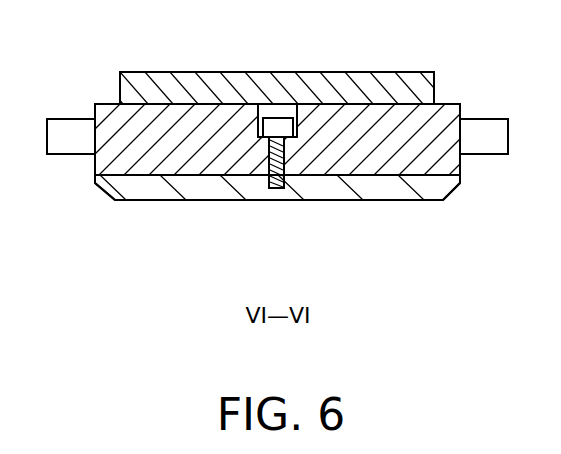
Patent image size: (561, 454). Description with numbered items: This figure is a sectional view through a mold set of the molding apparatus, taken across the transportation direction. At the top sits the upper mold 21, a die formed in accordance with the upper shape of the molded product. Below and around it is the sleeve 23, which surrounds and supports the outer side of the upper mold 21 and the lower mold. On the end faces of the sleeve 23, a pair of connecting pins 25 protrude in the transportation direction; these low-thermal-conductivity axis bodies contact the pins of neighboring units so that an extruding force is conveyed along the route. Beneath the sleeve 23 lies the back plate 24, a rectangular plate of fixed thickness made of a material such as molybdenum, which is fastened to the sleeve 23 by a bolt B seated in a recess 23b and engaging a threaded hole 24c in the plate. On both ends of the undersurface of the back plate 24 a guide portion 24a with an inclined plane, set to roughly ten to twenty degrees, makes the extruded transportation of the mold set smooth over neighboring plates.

The upper mold 21 is at (387, 76).
The sleeve 23 is at (448, 113).
The recess 23b is at (268, 112).
The bolt B is at (284, 125).
The connecting pin 25 is at (58, 128).
The back plate 24 is at (403, 188).
The guide portion 24a is at (113, 199).
The threaded hole 24c is at (281, 190).